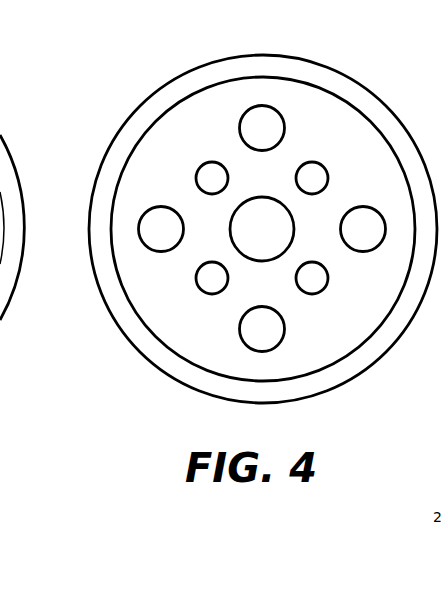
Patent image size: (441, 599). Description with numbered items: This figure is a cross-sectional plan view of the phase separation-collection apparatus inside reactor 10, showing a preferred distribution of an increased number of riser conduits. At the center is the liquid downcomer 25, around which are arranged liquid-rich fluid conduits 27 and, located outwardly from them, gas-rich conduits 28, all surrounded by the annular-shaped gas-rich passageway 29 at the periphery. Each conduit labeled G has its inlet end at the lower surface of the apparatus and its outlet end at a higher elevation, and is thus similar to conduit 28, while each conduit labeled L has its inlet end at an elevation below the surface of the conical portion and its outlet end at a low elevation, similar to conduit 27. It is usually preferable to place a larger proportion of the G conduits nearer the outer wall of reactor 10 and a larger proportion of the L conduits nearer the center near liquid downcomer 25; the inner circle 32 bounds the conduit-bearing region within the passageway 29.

The reactor 10 is at (121, 122).
The liquid-rich conduit L is at (197, 172).
The inner rim line 32 is at (113, 188).
The gas-rich conduit 28 is at (139, 221).
The liquid downcomer 25 is at (229, 240).
The liquid-rich fluid conduit 27 is at (194, 281).
The gas-rich conduit G is at (251, 107).
The annular-shaped gas-rich passageway 29 is at (281, 68).